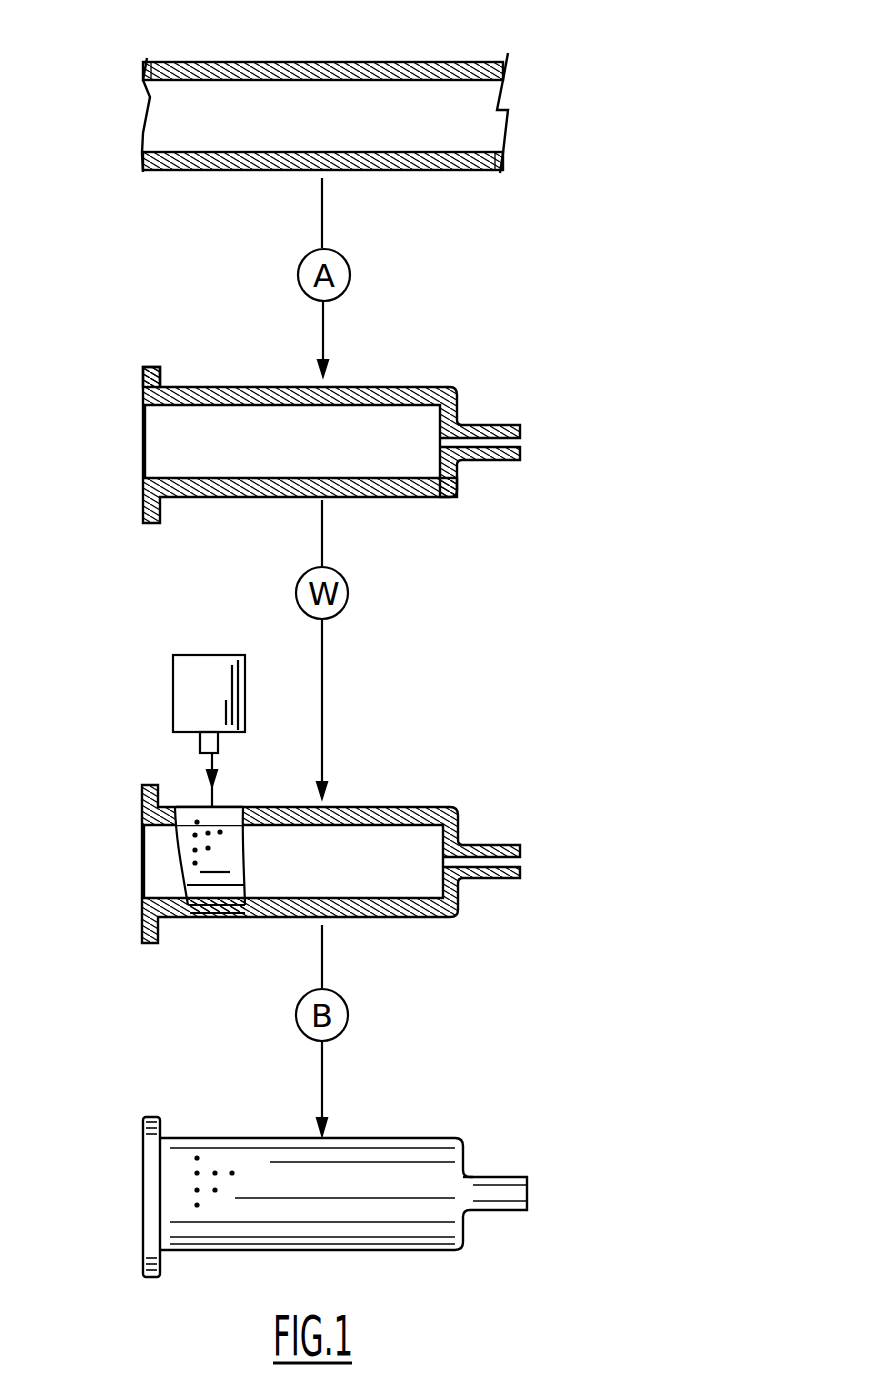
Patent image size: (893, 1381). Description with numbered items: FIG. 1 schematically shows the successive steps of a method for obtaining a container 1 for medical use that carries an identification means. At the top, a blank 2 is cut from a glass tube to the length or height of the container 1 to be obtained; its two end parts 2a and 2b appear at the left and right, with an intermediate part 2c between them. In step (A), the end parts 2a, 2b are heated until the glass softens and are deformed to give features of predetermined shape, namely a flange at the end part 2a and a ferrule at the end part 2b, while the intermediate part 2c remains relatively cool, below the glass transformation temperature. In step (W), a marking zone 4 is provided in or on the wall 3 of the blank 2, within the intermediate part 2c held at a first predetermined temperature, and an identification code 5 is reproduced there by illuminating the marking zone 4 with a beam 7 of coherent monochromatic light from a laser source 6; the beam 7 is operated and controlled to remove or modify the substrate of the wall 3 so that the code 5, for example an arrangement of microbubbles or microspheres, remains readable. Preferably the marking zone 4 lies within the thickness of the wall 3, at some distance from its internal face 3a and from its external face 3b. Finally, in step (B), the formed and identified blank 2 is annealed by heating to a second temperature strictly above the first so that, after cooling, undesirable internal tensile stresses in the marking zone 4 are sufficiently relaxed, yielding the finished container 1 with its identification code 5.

The container 1 is at (293, 979).
The blank 2 is at (333, 112).
The end part 2a is at (168, 172).
The end part 2b is at (490, 172).
The intermediate part 2c is at (342, 387).
The wall 3 is at (402, 905).
The internal face 3a is at (337, 825).
The external face 3b is at (353, 808).
The marking zone 4 is at (228, 820).
The identification code 5 is at (193, 837).
The laser source 6 is at (192, 697).
The beam 7 is at (212, 758).